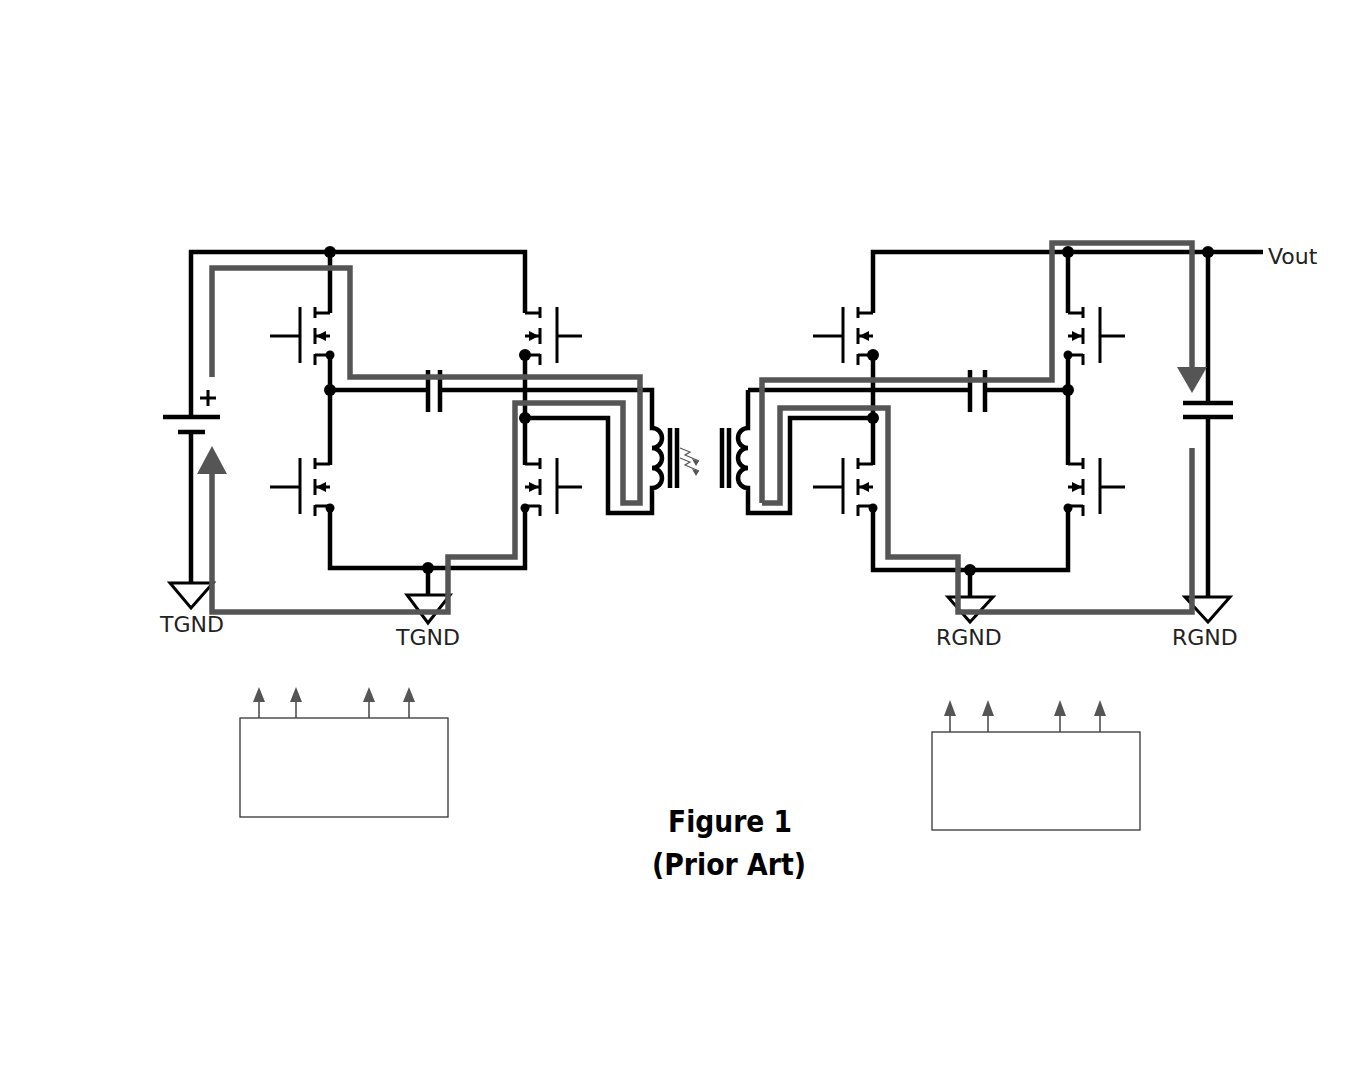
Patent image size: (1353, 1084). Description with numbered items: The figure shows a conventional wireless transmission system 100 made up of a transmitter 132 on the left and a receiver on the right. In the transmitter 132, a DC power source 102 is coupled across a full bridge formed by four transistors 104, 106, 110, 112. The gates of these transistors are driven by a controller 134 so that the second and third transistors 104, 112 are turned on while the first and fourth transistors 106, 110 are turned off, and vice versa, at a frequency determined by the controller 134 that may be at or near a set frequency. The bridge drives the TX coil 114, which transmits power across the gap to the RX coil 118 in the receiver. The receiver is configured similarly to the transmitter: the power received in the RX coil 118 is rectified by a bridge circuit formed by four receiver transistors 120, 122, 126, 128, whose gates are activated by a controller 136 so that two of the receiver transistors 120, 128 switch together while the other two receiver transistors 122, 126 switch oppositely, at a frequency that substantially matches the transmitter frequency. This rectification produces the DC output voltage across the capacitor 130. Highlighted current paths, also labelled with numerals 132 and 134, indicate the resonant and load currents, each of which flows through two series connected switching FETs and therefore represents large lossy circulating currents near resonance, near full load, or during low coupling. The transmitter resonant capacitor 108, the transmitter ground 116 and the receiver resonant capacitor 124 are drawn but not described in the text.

The system 100 is at (158, 128).
The DC power source 102 is at (178, 403).
The transistor Q2 104 is at (297, 330).
The transistor Q1 106 is at (297, 482).
The resonant capacitor Crt 108 is at (421, 352).
The transistor Q4 110 is at (573, 325).
The transistor Q3 112 is at (557, 515).
The TX coil 114 is at (660, 392).
The transmitter ground TGND 116 is at (283, 612).
The RX coil 118 is at (737, 492).
The transistor Q2r 120 is at (820, 310).
The transistor Q1r 122 is at (858, 523).
The resonant capacitor Crr 124 is at (965, 352).
The transistor Q4r 126 is at (1100, 362).
The transistor Q3r 128 is at (1100, 515).
The capacitor 130 is at (1225, 420).
The transmitter 132 is at (360, 242).
The controller 134 is at (918, 240).
The controller 136 is at (1032, 749).